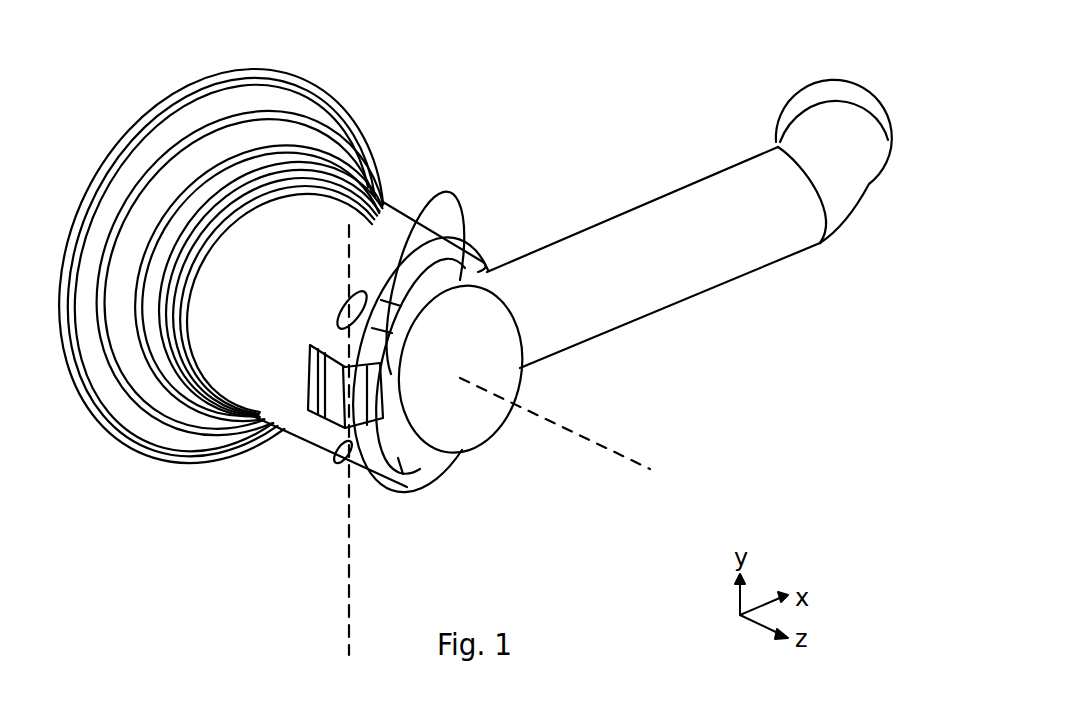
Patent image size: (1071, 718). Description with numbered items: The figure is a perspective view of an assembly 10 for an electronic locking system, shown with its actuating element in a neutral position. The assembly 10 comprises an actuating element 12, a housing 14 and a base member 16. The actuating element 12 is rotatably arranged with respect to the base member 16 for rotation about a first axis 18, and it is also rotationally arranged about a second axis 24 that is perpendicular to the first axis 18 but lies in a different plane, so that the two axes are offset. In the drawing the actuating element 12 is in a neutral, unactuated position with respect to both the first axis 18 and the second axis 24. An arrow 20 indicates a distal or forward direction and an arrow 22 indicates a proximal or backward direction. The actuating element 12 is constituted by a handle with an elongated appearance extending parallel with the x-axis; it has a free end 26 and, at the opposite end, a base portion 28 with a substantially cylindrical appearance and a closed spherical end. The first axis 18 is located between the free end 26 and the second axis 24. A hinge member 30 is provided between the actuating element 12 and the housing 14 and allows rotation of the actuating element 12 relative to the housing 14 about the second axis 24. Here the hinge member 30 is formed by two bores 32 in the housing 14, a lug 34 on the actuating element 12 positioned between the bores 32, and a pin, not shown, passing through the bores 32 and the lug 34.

The assembly 10 is at (529, 107).
The actuating element 12 is at (767, 247).
The housing 14 is at (400, 230).
The base member 16 is at (297, 97).
The first axis 18 is at (622, 453).
The arrow 20 is at (150, 505).
The arrow 22 is at (150, 533).
The second axis 24 is at (350, 548).
The free end 26 is at (847, 145).
The base portion 28 is at (461, 431).
The hinge member 30 is at (318, 432).
The bores 32 is at (341, 320).
The lug 34 is at (333, 387).